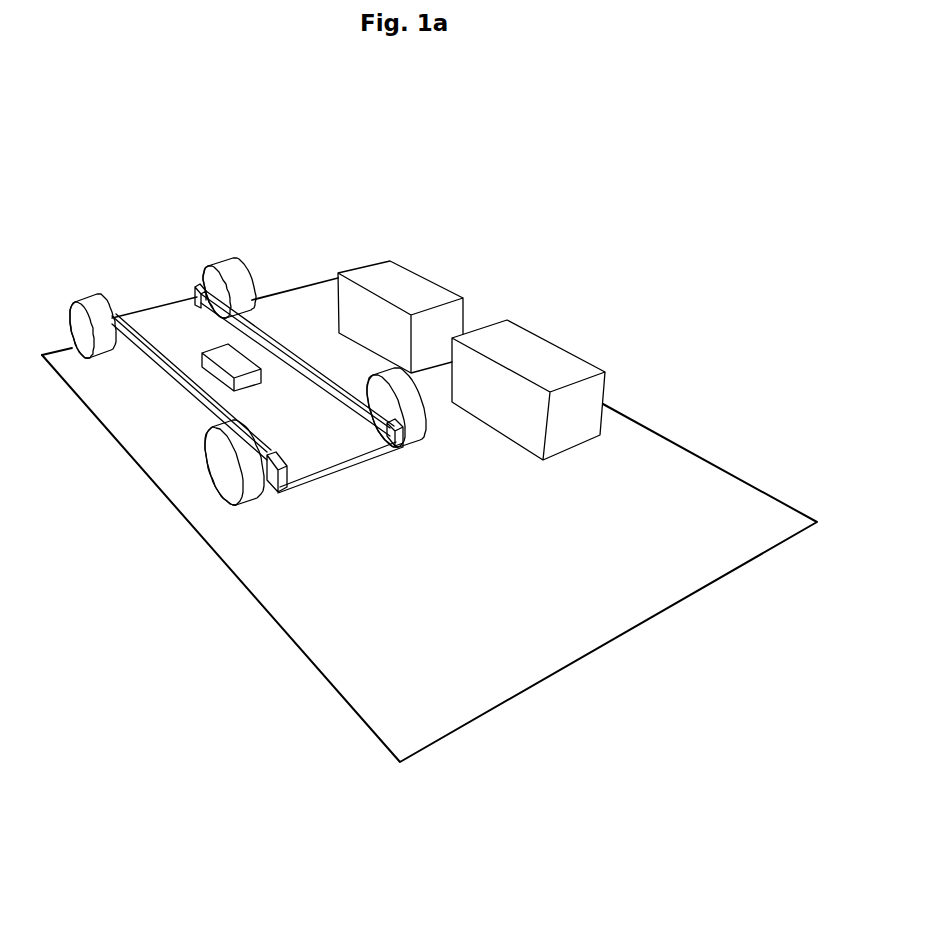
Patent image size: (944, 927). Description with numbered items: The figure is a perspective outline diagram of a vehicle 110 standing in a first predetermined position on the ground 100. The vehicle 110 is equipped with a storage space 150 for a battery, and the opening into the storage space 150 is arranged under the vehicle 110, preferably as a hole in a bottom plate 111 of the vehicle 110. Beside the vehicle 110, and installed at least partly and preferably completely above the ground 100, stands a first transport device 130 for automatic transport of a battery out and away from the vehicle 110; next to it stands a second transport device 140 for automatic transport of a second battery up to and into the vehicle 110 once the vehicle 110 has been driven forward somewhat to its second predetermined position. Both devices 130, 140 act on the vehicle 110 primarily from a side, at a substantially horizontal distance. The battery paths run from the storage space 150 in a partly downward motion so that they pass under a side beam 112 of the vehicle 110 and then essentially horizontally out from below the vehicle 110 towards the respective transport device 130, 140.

The ground 100 is at (690, 468).
The vehicle 110 is at (152, 330).
The bottom plate 111 is at (150, 308).
The side beam 112 is at (292, 330).
The first transport device 130 is at (365, 265).
The second transport device 140 is at (518, 323).
The storage space 150 is at (218, 373).